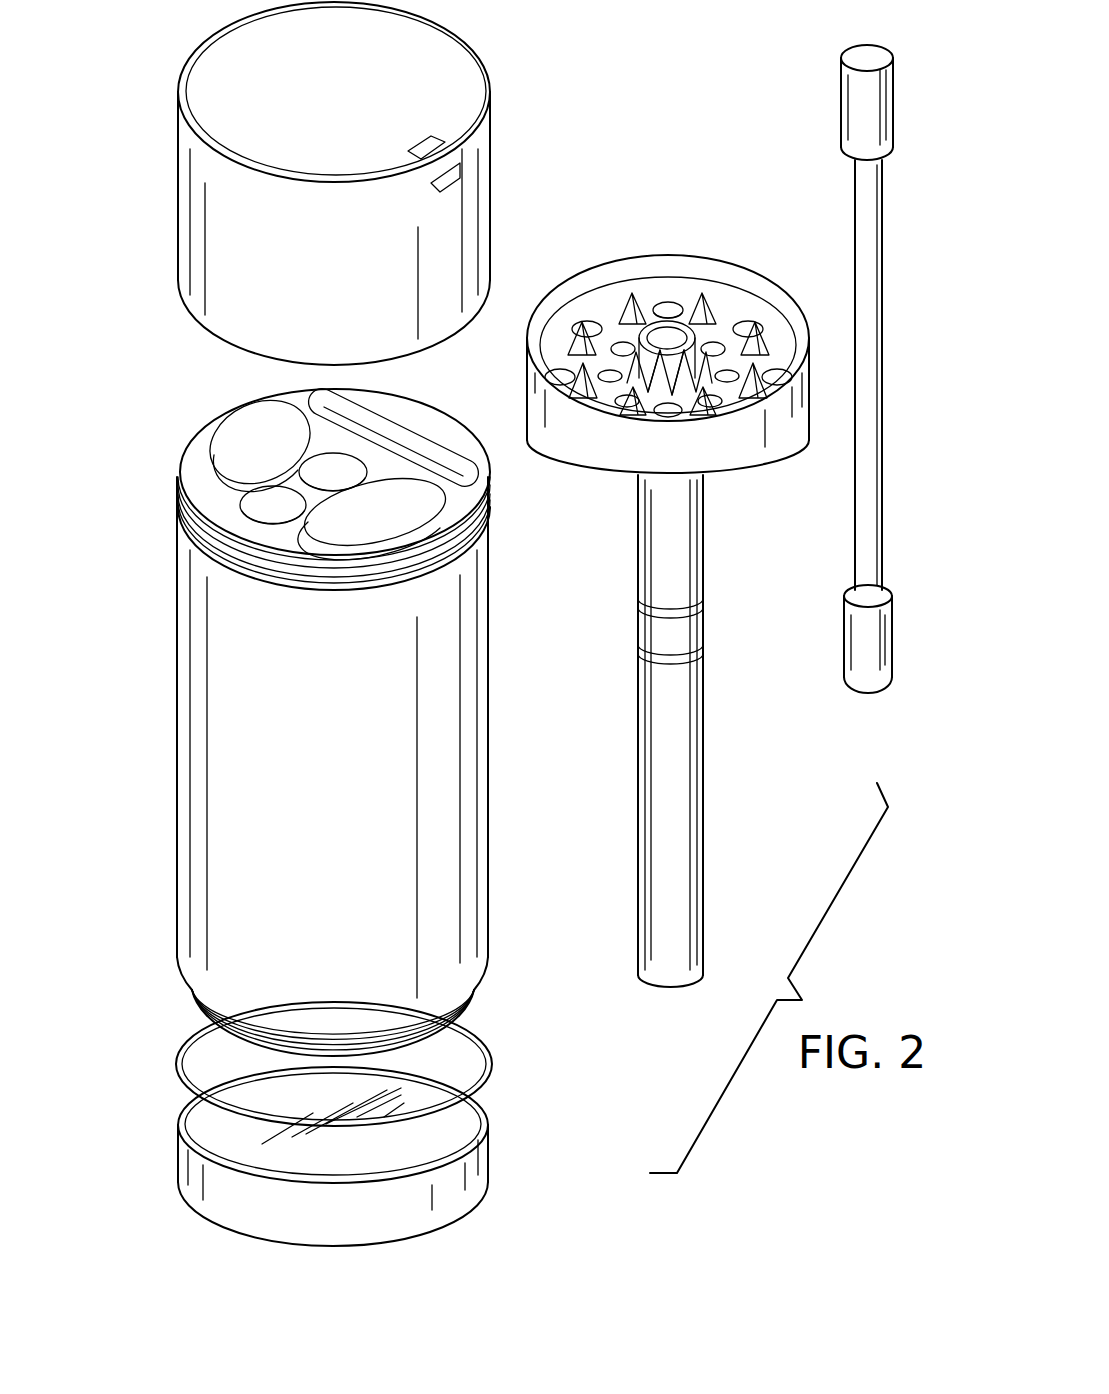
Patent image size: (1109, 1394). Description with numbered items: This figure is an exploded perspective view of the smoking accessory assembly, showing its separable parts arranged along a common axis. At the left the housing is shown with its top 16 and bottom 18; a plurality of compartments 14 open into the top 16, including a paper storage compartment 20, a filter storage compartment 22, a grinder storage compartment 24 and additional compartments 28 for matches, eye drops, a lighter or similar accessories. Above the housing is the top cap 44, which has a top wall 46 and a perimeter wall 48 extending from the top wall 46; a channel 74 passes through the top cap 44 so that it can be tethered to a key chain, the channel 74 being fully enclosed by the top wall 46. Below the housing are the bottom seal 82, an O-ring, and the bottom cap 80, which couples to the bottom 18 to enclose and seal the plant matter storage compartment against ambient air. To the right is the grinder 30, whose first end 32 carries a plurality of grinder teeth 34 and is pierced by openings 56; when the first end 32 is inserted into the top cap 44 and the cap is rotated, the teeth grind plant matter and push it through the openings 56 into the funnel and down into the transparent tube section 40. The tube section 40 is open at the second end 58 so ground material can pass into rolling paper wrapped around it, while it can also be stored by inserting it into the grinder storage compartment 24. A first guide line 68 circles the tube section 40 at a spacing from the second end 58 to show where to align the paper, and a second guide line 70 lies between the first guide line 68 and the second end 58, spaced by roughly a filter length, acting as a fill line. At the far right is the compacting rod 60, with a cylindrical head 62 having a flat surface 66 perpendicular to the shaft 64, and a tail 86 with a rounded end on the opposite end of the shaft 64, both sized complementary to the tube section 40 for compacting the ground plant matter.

The compartments 14 is at (327, 466).
The top 16 is at (215, 487).
The bottom 18 is at (319, 1128).
The paper storage compartment 20 is at (417, 450).
The filter storage compartment 22 is at (268, 517).
The grinder storage compartment 24 is at (350, 467).
The additional compartments 28 is at (222, 467).
The grinder 30 is at (740, 782).
The first end 32 is at (727, 310).
The grinder teeth 34 is at (627, 313).
The tube section 40 is at (648, 753).
The top cap 44 is at (168, 46).
The top wall 46 is at (431, 51).
The perimeter wall 48 is at (197, 198).
The openings 56 is at (740, 330).
The second end 58 is at (672, 980).
The compacting rod 60 is at (830, 474).
The head 62 is at (815, 88).
The shaft 64 is at (878, 390).
The flat surface 66 is at (867, 55).
The first guide line 68 is at (638, 601).
The second guide line 70 is at (638, 652).
The channel 74 is at (443, 183).
The bottom cap 80 is at (222, 1195).
The bottom seal 82 is at (184, 1036).
The tail 86 is at (882, 668).